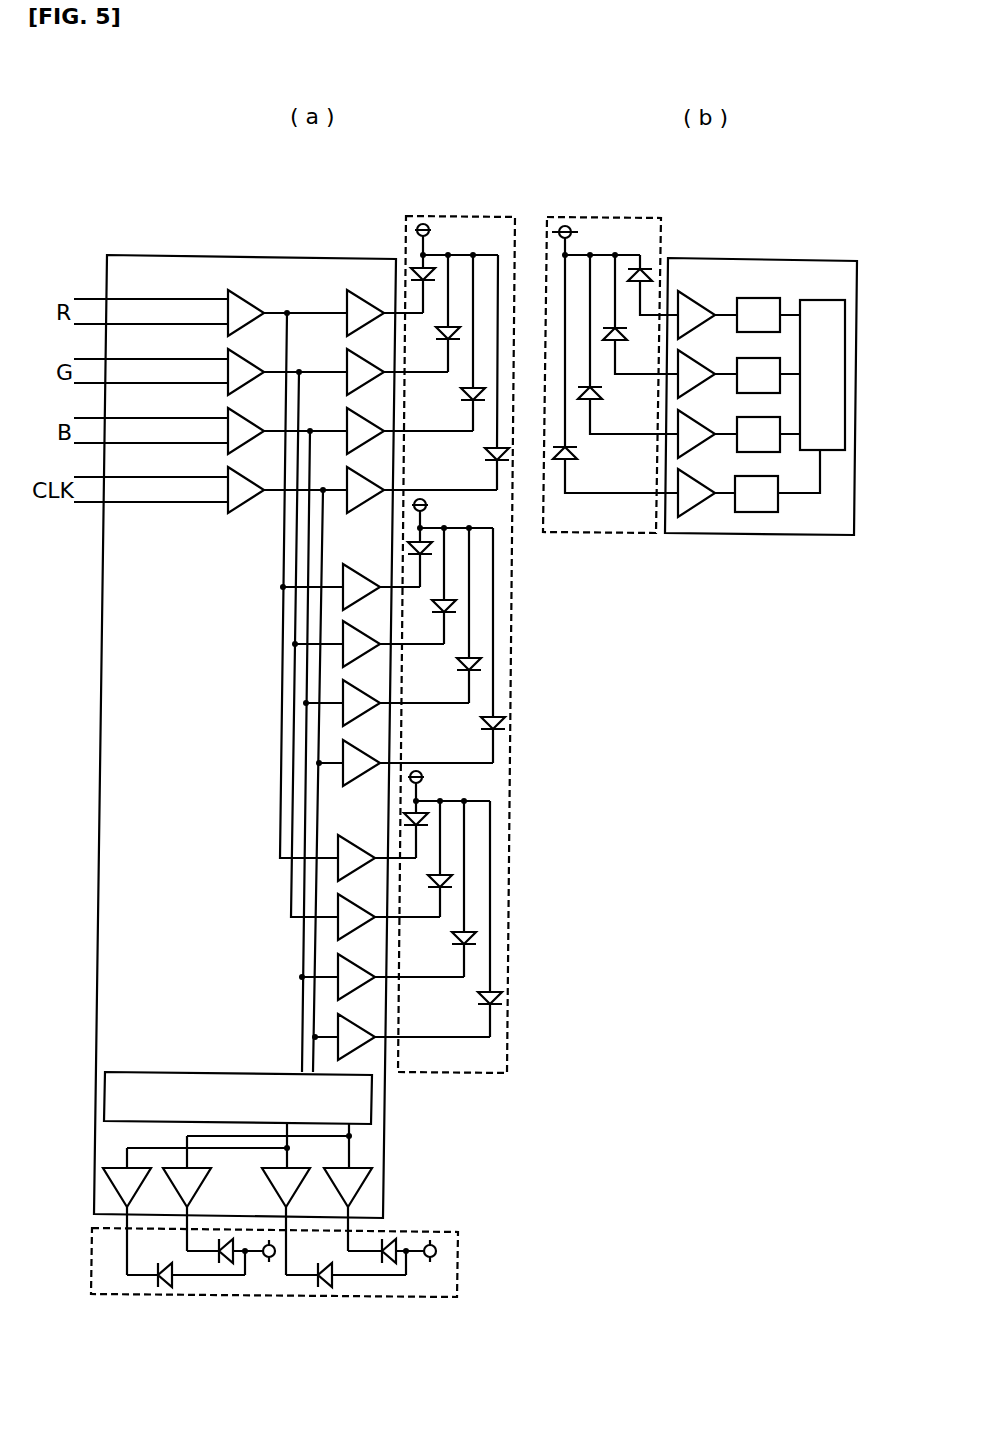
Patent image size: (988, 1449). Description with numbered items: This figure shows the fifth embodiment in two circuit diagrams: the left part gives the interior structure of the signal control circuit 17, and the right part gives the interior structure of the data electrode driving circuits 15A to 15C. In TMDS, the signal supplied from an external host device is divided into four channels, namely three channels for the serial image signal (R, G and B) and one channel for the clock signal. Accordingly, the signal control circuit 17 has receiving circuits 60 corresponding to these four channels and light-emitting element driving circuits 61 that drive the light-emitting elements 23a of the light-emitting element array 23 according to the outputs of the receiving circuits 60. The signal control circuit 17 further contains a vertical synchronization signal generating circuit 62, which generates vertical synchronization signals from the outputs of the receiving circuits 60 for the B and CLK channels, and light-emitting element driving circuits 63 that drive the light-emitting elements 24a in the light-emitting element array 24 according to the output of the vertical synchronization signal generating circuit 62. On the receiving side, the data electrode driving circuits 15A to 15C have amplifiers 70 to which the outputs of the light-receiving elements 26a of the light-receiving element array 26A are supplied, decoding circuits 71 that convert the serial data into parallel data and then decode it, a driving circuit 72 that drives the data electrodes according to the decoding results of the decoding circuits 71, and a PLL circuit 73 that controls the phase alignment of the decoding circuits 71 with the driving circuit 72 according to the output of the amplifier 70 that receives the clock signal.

The signal control circuit 17 is at (170, 255).
The receiving circuit 60 is at (252, 368).
The light-emitting element driving circuit 61 is at (368, 368).
The vertical synchronization signal generating circuit 62 is at (163, 1072).
The light-emitting element driving circuit 63 is at (180, 1195).
The light-emitting element array 23 is at (492, 216).
The light-emitting element 23a is at (448, 327).
The light-emitting element array 24 is at (458, 1258).
The light-emitting element 24a is at (333, 1282).
The light-receiving element array 26A is at (596, 217).
The light-receiving element 26a is at (565, 460).
The data electrode driving circuit 15A is at (750, 258).
The data electrode driving circuit 15C is at (790, 374).
The amplifier 70 is at (695, 374).
The decoding circuit 71 is at (768, 437).
The driving circuit 72 is at (833, 450).
The PLL circuit 73 is at (768, 512).